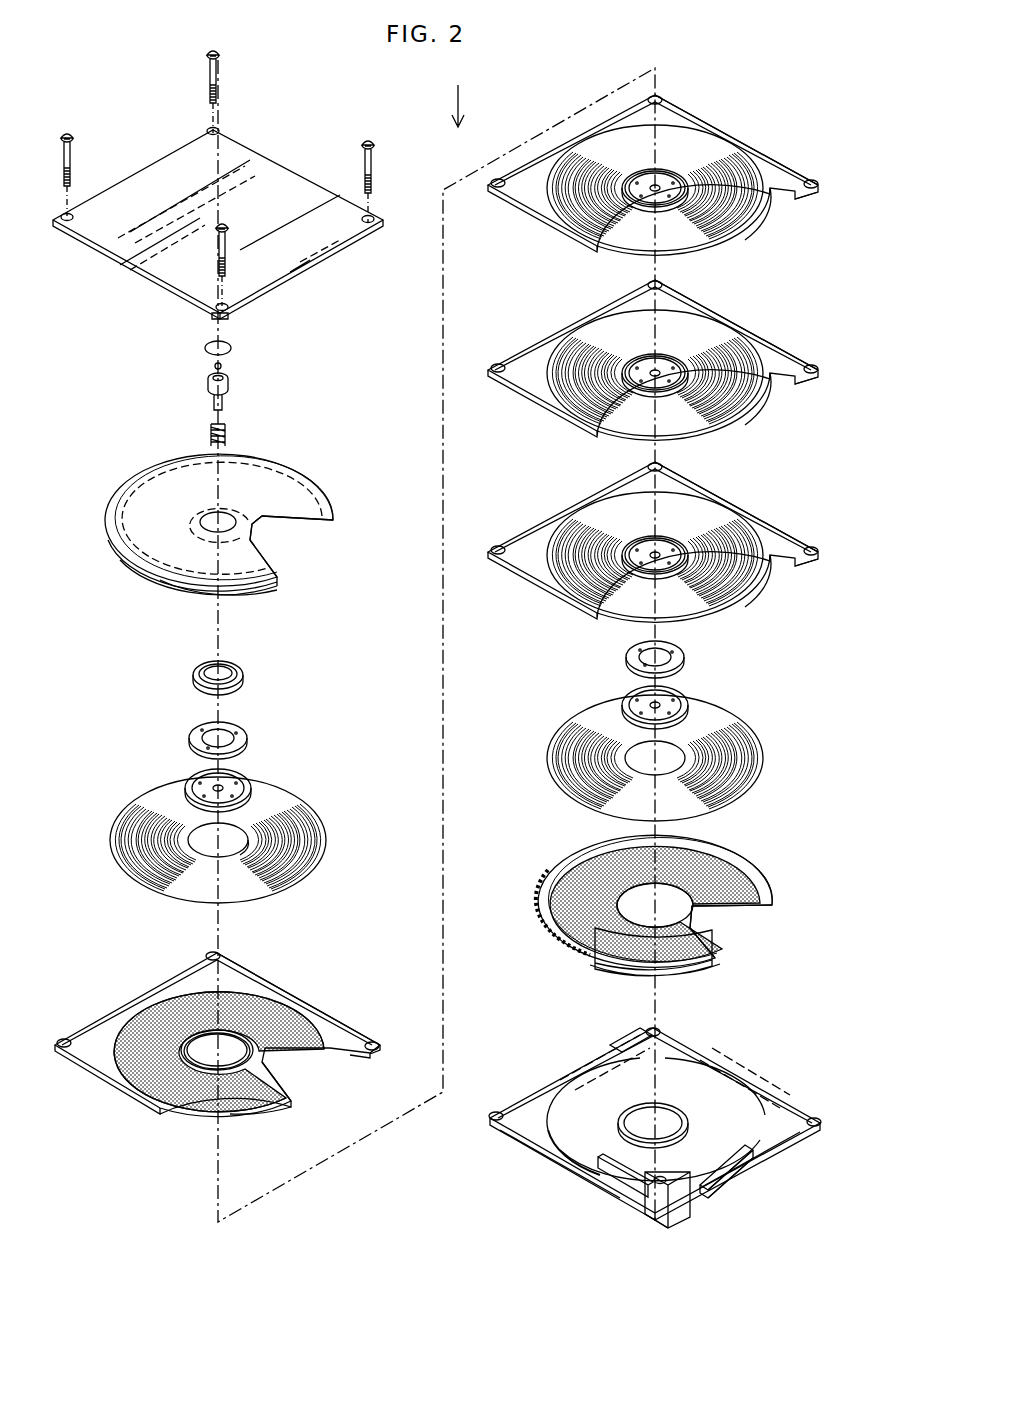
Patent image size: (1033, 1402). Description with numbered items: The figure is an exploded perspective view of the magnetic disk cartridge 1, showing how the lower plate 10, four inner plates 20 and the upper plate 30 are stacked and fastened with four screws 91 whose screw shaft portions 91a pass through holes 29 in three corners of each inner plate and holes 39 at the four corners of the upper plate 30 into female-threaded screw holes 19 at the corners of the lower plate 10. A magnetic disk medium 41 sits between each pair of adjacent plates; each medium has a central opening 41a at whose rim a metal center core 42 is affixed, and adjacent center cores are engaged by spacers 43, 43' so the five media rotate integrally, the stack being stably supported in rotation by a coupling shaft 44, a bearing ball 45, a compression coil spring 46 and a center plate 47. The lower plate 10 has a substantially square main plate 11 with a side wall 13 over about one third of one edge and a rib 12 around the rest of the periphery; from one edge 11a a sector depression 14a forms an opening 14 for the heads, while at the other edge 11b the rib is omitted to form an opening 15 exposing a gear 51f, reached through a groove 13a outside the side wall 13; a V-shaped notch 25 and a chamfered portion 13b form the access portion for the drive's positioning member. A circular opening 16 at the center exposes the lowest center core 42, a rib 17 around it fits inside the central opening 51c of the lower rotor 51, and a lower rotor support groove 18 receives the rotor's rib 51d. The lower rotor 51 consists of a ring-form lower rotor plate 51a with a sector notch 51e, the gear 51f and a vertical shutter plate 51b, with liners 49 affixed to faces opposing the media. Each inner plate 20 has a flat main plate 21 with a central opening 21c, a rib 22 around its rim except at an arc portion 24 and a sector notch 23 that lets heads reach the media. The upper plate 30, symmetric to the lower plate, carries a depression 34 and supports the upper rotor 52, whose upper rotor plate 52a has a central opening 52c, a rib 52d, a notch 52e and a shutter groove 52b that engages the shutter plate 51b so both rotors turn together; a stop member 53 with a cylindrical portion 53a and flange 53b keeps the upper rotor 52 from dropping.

The magnetic disk cartridge 1 is at (522, 93).
The lower plate 10 is at (649, 1111).
The main plate 11 is at (656, 1114).
The one edge 11a is at (752, 1150).
The other edge 11b is at (565, 1180).
The rib 12 is at (775, 1092).
The side wall 13 is at (648, 1201).
The groove 13a is at (610, 1172).
The chamfered portion 13b is at (660, 1213).
The opening 14 is at (769, 1190).
The depression 14a is at (760, 1158).
The opening 15 is at (560, 1162).
The circular opening 16 is at (540, 1148).
The rib 17 is at (600, 1062).
The lower rotor support groove 18 is at (628, 1040).
The screw holes 19 is at (648, 1028).
The inner plate 20 is at (264, 970).
The main plate 21 is at (164, 1047).
The central opening 21c is at (205, 1062).
The rib 22 is at (340, 1022).
The notch 23 is at (288, 1074).
The arc portion 24 is at (240, 1118).
The notch 25 is at (712, 1194).
The holes 29 is at (210, 953).
The upper plate 30 is at (232, 155).
The depression 34 is at (315, 263).
The holes 39 is at (72, 212).
The magnetic disk medium 41 is at (320, 815).
The opening 41a is at (245, 857).
The center core 42 is at (242, 780).
The spacer 43 is at (681, 657).
The spacer 43' is at (250, 740).
The coupling shaft 44 is at (224, 401).
The bearing ball 45 is at (222, 366).
The compression coil spring 46 is at (228, 436).
The center plate 47 is at (231, 347).
The liner 49 is at (125, 488).
The lower rotor 51 is at (670, 906).
The lower rotor plate 51a is at (760, 876).
The shutter plate 51b is at (680, 958).
The central opening 51c is at (640, 880).
The rib 51d is at (775, 905).
The notch 51e is at (748, 928).
The gear 51f is at (535, 905).
The upper rotor 52 is at (256, 515).
The upper rotor plate 52a is at (300, 500).
The shutter groove 52b is at (190, 590).
The central opening 52c is at (150, 580).
The rib 52d is at (335, 520).
The notch 52e is at (292, 546).
The stop member 53 is at (224, 659).
The cylindrical portion 53a is at (238, 666).
The flange 53b is at (196, 675).
The screws 91 is at (73, 137).
The screw shaft portions 91a is at (71, 168).